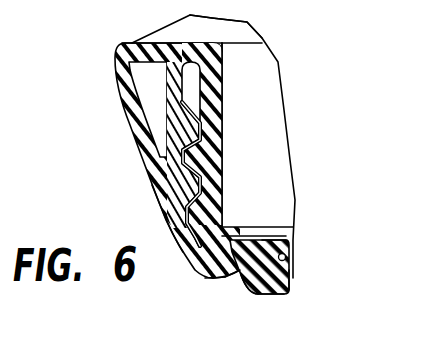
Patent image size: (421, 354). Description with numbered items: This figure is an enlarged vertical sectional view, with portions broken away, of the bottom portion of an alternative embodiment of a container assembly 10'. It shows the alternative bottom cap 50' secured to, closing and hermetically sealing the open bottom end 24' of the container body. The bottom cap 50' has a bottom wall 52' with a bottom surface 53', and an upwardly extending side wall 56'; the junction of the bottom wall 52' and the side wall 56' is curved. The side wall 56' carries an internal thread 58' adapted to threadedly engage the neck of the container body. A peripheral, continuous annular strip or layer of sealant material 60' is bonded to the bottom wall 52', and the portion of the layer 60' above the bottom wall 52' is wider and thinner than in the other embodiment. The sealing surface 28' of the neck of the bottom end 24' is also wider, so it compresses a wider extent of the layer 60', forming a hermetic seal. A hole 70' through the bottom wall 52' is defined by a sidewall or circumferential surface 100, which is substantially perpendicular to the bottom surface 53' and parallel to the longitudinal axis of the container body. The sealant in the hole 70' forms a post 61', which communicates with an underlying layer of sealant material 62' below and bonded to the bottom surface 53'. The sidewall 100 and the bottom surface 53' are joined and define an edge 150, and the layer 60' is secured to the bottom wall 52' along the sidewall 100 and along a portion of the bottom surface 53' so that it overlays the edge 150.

The container assembly 10' is at (257, 146).
The open bottom end 24' is at (264, 27).
The sealing surface 28' is at (257, 139).
The bottom cap 50' is at (140, 162).
The side wall 56' is at (142, 150).
The internal thread 58' is at (144, 218).
The annular strip or layer of sealant material 60' is at (280, 252).
The hole 70' is at (314, 255).
The post 61' is at (316, 264).
The sidewall or circumferential surface 100 is at (275, 283).
The underlying layer of sealant material 62' is at (289, 313).
The edge 150 is at (256, 276).
The bottom surface 53' is at (195, 293).
The bottom wall 52' is at (209, 303).